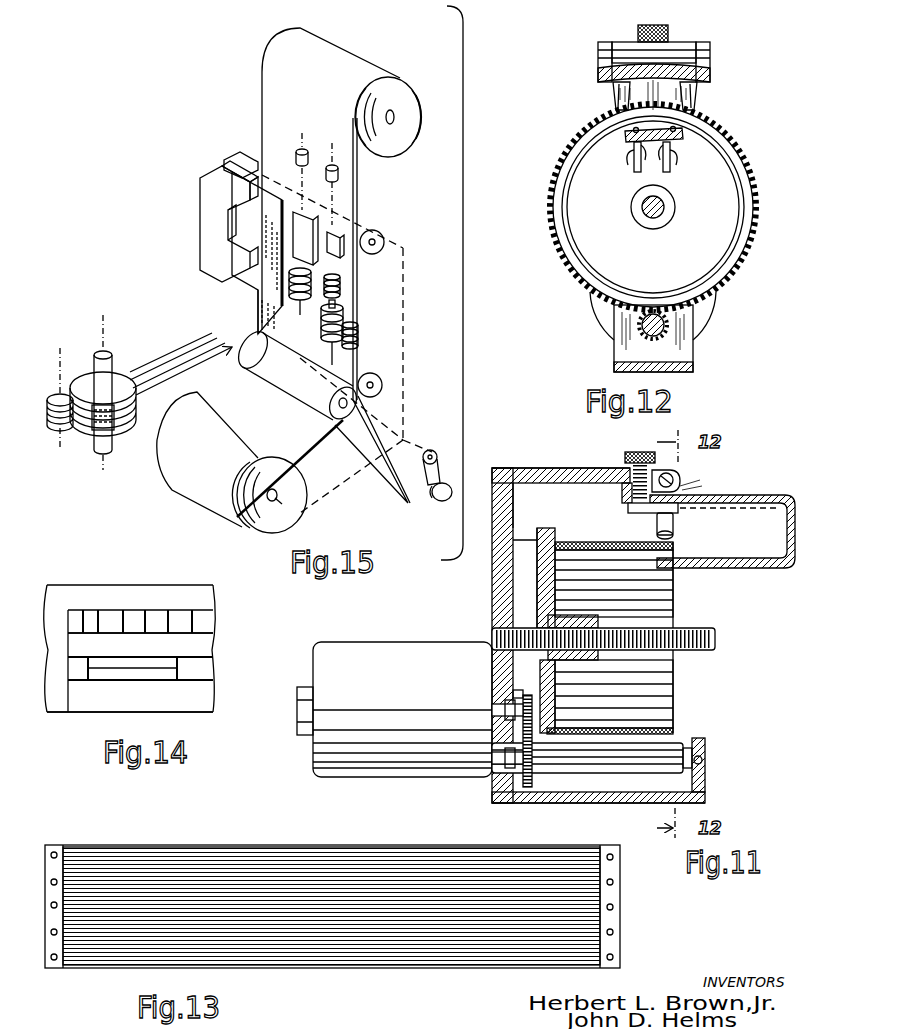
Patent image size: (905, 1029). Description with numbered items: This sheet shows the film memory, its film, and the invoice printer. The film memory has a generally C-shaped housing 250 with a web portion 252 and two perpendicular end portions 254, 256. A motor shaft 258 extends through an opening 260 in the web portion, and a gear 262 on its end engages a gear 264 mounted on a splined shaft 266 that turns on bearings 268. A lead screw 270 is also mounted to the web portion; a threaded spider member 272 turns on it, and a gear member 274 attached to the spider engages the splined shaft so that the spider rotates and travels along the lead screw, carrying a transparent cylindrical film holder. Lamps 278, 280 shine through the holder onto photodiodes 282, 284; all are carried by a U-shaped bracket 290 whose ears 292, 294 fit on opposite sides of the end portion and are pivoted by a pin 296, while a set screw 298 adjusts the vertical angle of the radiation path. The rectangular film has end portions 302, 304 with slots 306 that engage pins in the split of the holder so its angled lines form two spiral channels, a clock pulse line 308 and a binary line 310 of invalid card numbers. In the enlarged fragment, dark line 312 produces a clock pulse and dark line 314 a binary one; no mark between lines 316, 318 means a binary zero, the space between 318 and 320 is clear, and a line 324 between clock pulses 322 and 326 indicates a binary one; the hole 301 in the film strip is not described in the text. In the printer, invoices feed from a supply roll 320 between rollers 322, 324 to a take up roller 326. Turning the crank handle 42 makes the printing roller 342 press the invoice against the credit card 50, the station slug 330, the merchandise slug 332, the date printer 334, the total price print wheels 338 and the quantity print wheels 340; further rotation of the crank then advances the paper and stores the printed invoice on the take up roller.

In FIG. 15, the crank handle 42 is at (438, 462).
In FIG. 15, the credit card 50 is at (264, 190).
In FIG. 12, the C-shaped housing 250 is at (695, 372).
In FIG. 11, the C-shaped housing 250 is at (516, 470).
In FIG. 11, the web portion 252 is at (518, 522).
In FIG. 11, the end portion 254 is at (595, 468).
In FIG. 11, the end portion 256 is at (535, 800).
In FIG. 11, the motor shaft 258 is at (500, 708).
In FIG. 11, the opening 260 is at (505, 695).
In FIG. 11, the gear 262 is at (556, 690).
In FIG. 11, the gear 264 is at (523, 780).
In FIG. 11, the splined shaft 266 is at (697, 740).
In FIG. 11, the bearings 268 is at (500, 758).
In FIG. 11, the lead screw 270 is at (715, 630).
In FIG. 11, the spider member 272 is at (590, 624).
In FIG. 11, the gear member 274 is at (537, 592).
In FIG. 12, the lamp 278 is at (614, 97).
In FIG. 12, the lamp 280 is at (700, 100).
In FIG. 12, the photodiode 282 is at (636, 150).
In FIG. 12, the photodiode 284 is at (668, 150).
In FIG. 11, the U-shaped bracket 290 is at (783, 495).
In FIG. 12, the ear 292 is at (598, 58).
In FIG. 12, the ear 294 is at (710, 62).
In FIG. 11, the pin 296 is at (680, 478).
In FIG. 11, the set screw 298 is at (640, 452).
In FIG. 13, the sprocket hole 301 is at (54, 933).
In FIG. 13, the end portion of film 302 is at (45, 860).
In FIG. 13, the end portion of film 304 is at (612, 870).
In FIG. 13, the openings or slots 306 is at (612, 932).
In FIG. 14, the spiral line 308 is at (203, 627).
In FIG. 14, the spiral line 310 is at (203, 677).
In FIG. 14, the dark line 312 is at (86, 610).
In FIG. 14, the dark line 314 is at (82, 680).
In FIG. 14, the clock pulse line 316 is at (102, 610).
In FIG. 14, the clock pulse line 318 is at (128, 610).
In FIG. 15, the clock pulse line 320 is at (410, 95).
In FIG. 14, the clock pulse line 320 is at (150, 610).
In FIG. 15, the clock pulse line 322 is at (336, 422).
In FIG. 14, the clock pulse line 322 is at (172, 610).
In FIG. 15, the line 324 is at (380, 378).
In FIG. 14, the line 324 is at (180, 665).
In FIG. 15, the clock pulse line 326 is at (306, 480).
In FIG. 14, the clock pulse line 326 is at (195, 615).
In FIG. 15, the print slug 330 is at (317, 225).
In FIG. 15, the merchandise print slug 332 is at (342, 240).
In FIG. 15, the manually settable dates 334 is at (280, 298).
In FIG. 15, the total price print wheels 338 is at (100, 430).
In FIG. 15, the quantity delivered print wheels 340 is at (345, 318).
In FIG. 15, the printing roller 342 is at (383, 240).